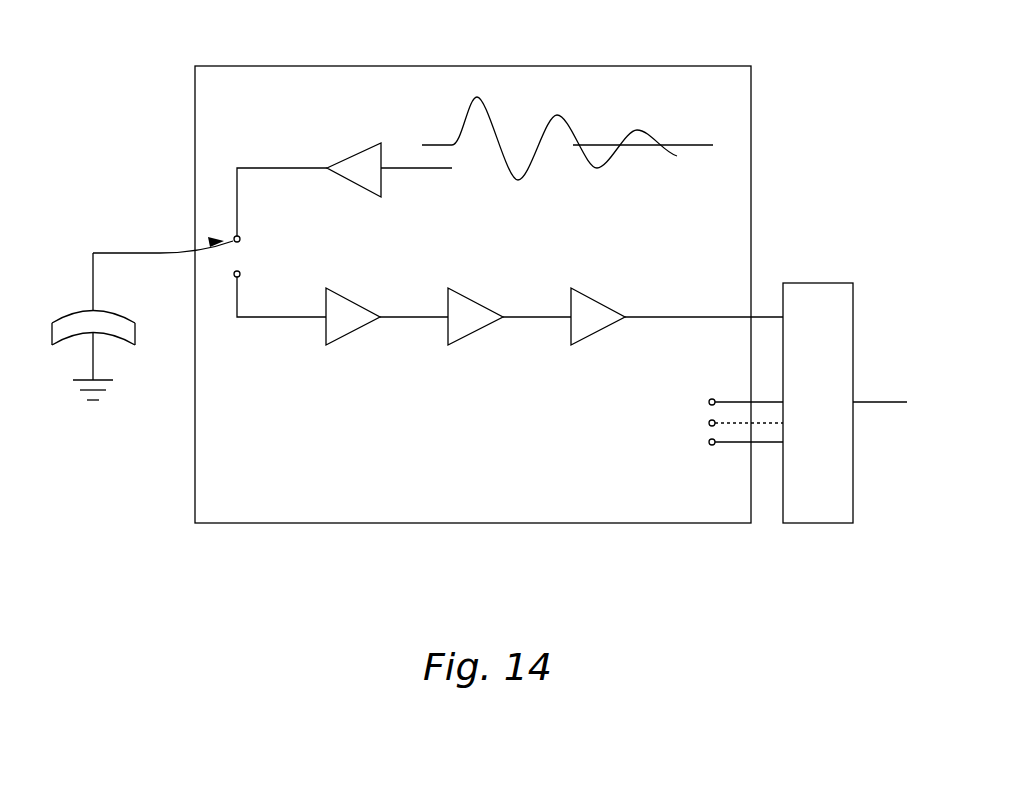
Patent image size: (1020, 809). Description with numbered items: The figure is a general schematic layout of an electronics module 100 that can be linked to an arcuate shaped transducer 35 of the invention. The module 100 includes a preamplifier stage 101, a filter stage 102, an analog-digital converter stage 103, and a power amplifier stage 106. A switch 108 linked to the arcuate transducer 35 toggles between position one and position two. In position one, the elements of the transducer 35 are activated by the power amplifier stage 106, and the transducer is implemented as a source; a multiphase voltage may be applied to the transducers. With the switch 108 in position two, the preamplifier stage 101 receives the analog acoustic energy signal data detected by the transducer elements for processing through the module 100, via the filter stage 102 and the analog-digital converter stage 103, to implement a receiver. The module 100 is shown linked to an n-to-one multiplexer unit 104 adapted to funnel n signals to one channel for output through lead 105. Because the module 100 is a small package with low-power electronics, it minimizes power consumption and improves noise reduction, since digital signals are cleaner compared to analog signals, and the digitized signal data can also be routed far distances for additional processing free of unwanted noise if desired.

The electronics module 100 is at (645, 36).
The arcuate shaped transducer 35 is at (65, 317).
The switch 108 is at (185, 250).
The power amplifier stage 106 is at (359, 151).
The preamplifier stage 101 is at (346, 293).
The filter stage 102 is at (470, 293).
The analog-digital converter (ADC) stage 103 is at (596, 293).
The n-to-1 multiplexer (MUX) unit 104 is at (821, 282).
The lead 105 is at (886, 401).